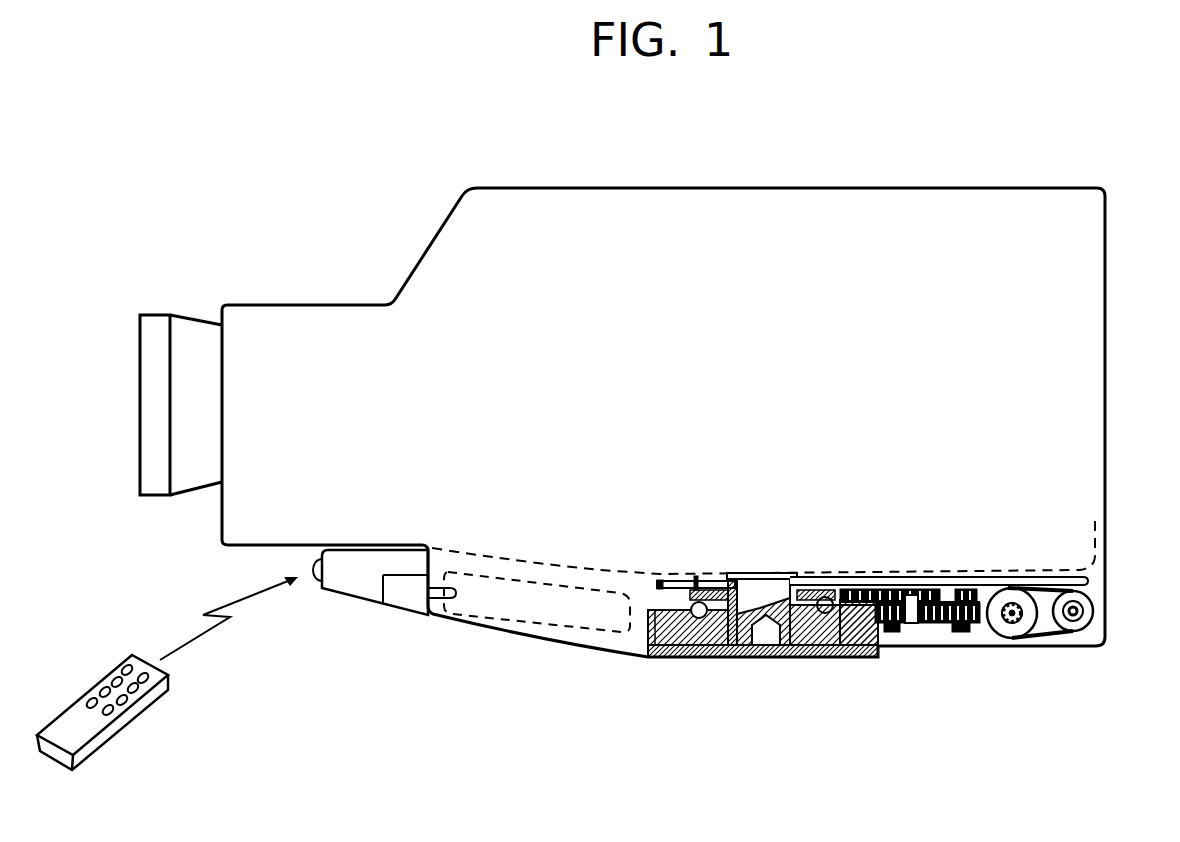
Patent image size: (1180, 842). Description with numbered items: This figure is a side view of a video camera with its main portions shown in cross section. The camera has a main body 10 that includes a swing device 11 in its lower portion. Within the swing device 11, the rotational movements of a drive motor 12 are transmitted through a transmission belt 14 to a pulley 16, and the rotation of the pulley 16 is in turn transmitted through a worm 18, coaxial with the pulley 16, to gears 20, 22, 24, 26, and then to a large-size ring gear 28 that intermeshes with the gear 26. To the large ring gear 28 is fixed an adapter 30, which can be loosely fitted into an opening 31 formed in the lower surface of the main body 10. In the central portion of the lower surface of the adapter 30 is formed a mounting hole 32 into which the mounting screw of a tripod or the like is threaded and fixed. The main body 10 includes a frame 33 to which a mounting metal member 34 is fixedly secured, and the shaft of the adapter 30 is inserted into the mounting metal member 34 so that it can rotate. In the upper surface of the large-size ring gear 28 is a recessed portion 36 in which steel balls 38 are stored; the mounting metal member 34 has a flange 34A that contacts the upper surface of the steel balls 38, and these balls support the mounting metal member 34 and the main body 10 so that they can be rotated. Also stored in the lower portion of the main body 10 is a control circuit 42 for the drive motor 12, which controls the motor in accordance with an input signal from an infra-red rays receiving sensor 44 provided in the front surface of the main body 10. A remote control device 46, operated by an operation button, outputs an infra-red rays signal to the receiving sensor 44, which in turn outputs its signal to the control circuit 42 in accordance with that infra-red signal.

The main body 10 is at (719, 399).
The swing device 11 is at (1110, 576).
The drive motor 12 is at (1083, 646).
The transmission belt 14 is at (1045, 648).
The pulley 16 is at (1013, 648).
The worm 18 is at (1012, 588).
The gear 20 is at (950, 648).
The gear 22 is at (972, 594).
The gear 24 is at (902, 590).
The gear 26 is at (913, 648).
The large-size ring gear 28 is at (858, 657).
The adapter 30 is at (810, 657).
The opening 31 is at (646, 656).
The mounting hole 32 is at (766, 657).
The frame 33 is at (658, 580).
The mounting metal member 34 is at (736, 580).
The flange 34A is at (696, 587).
The recessed portion 36 is at (724, 657).
The steel ball 38 is at (825, 596).
The control circuit 42 is at (495, 630).
The infra-red rays receiving sensor 44 is at (312, 590).
The remote control device 46 is at (150, 697).